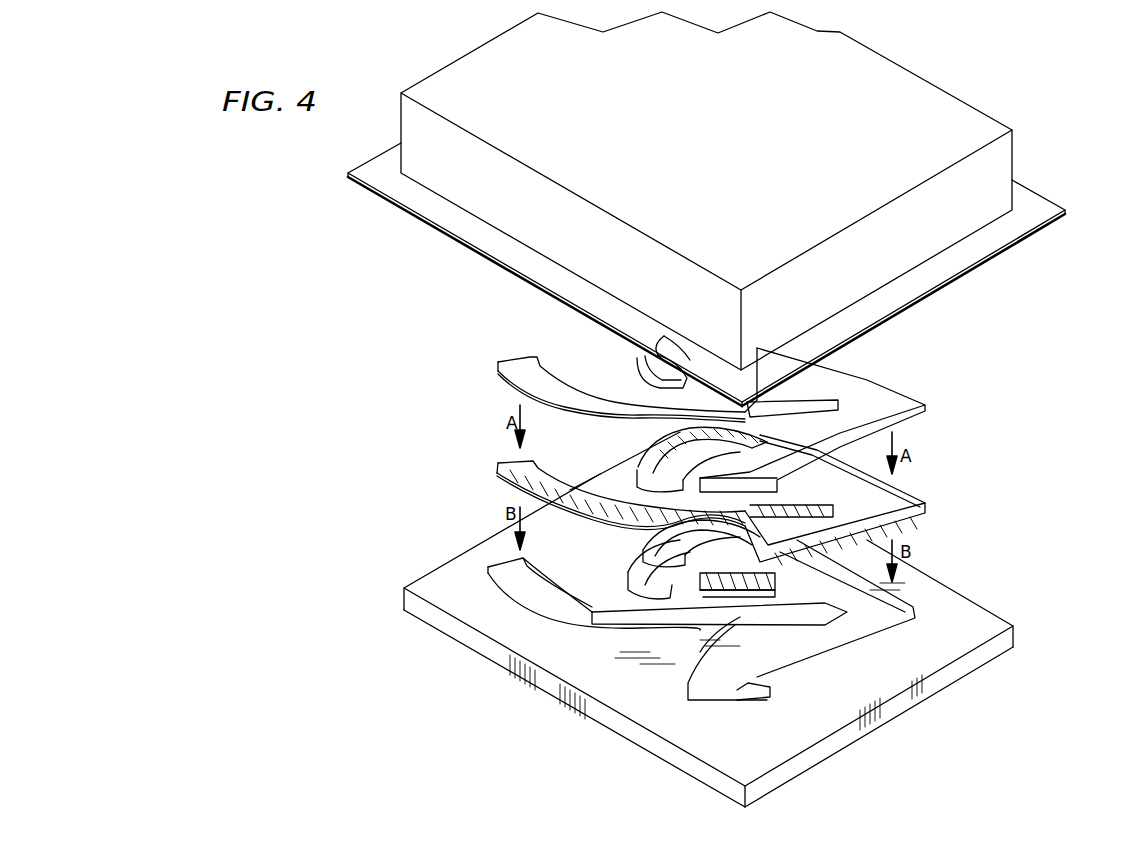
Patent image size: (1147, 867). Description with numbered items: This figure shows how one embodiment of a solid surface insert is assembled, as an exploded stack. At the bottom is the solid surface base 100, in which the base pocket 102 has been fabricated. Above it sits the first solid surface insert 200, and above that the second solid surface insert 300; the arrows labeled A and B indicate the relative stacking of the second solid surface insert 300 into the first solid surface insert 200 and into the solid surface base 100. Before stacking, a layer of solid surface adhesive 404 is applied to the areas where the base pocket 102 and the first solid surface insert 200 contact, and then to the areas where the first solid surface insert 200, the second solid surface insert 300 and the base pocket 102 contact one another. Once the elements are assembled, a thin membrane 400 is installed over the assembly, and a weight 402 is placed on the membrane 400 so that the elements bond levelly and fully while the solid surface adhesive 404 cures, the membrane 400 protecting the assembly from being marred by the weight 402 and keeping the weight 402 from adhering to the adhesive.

The solid surface base 100 is at (800, 733).
The base pocket 102 is at (872, 612).
The first solid surface insert 200 is at (907, 505).
The second solid surface insert 300 is at (908, 402).
The membrane 400 is at (390, 180).
The weight 402 is at (967, 197).
The solid surface adhesive 404 is at (523, 467).